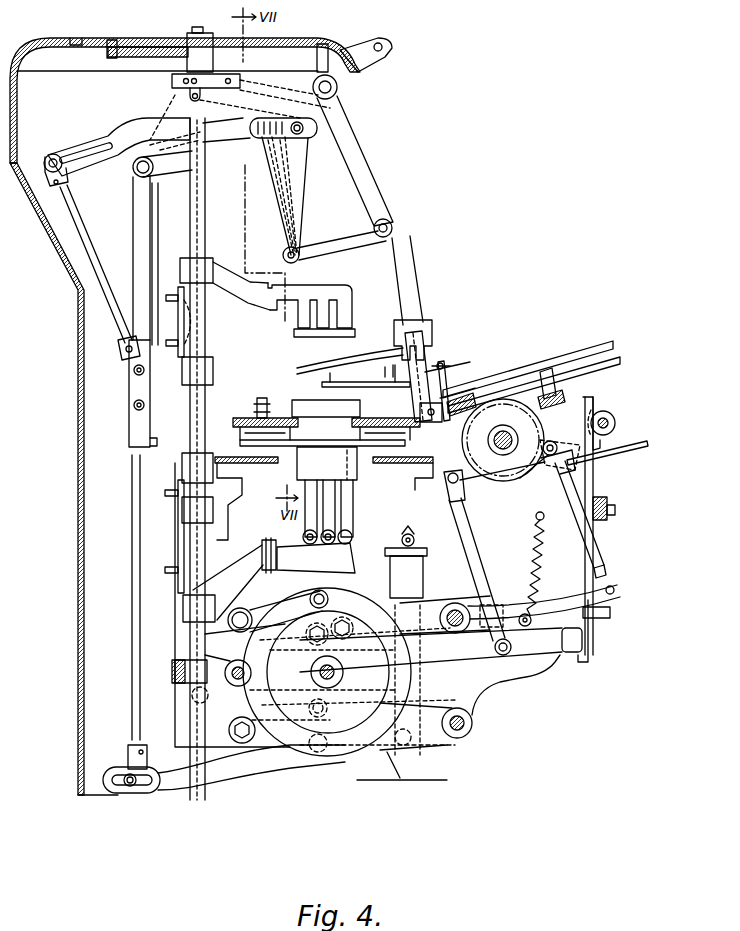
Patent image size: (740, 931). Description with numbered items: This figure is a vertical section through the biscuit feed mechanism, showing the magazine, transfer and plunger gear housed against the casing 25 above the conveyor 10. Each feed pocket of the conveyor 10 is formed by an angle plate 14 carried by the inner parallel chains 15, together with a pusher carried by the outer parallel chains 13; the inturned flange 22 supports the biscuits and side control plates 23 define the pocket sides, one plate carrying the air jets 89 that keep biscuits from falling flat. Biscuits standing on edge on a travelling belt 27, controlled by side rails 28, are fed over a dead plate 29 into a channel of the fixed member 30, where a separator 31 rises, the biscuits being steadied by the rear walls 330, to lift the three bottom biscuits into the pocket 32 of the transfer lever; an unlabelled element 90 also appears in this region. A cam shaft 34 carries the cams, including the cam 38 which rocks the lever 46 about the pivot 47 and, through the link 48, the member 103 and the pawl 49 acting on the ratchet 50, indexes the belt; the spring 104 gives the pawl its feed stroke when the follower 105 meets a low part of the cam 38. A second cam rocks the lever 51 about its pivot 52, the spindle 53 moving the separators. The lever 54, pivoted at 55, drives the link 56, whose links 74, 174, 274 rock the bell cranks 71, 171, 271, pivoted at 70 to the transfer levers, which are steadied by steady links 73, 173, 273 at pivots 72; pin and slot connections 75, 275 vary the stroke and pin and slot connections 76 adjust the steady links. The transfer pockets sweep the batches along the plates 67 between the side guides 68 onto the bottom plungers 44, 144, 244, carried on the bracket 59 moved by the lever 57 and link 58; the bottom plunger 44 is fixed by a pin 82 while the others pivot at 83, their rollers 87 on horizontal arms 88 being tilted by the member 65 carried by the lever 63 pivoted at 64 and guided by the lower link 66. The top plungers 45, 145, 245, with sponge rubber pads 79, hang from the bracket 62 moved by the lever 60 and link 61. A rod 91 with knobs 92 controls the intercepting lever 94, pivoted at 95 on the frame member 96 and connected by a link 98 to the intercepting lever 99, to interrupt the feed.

The conveyor 10 is at (292, 390).
The outer parallel chains 13 is at (250, 455).
The angle plate 14 is at (318, 418).
The inner parallel chains 15 is at (325, 501).
The inturned flange 22 is at (318, 443).
The side control plates 23 is at (240, 416).
The casing 25 is at (76, 283).
The travelling belt 27 is at (618, 362).
The side rails 28 is at (585, 350).
The dead plate 29 is at (465, 408).
The fixed member 30 is at (448, 388).
The separator 31 is at (426, 353).
The pocket 32 is at (434, 336).
The cam shaft 34 is at (343, 676).
The cam 38 is at (300, 730).
The bottom plunger 44 is at (354, 497).
The top plunger 45 is at (343, 302).
The lever 46 is at (478, 606).
The pivot 47 is at (452, 605).
The link 48 is at (598, 548).
The pawl 49 is at (553, 441).
The ratchet 50 is at (505, 425).
The lever 51 is at (470, 655).
The pivot 52 is at (236, 700).
The spindle 53 is at (478, 543).
The lever 54 is at (212, 775).
The pivot 55 is at (474, 722).
The link 56 is at (132, 524).
The lever 57 is at (244, 639).
The link 58 is at (183, 608).
The bracket 59 is at (247, 562).
The lever 60 is at (205, 703).
The link 61 is at (213, 363).
The bracket 62 is at (250, 300).
The lever 63 is at (258, 612).
The pivot 64 is at (244, 607).
The member 65 is at (420, 550).
The lower link 66 is at (262, 750).
The plates 67 is at (326, 383).
The side guides 68 is at (373, 356).
The pivot 70 is at (392, 226).
The bell crank 71 is at (115, 120).
The pivot 72 is at (296, 263).
The steady link 73 is at (294, 200).
The link 74 is at (85, 232).
The pin and slot connection 75 is at (58, 152).
The pin and slot connections 76 is at (250, 132).
The sponge rubber pads 79 is at (288, 346).
The pin 82 is at (352, 545).
The pivot 83 is at (306, 534).
The rollers 87 is at (405, 522).
The horizontal arms 88 is at (414, 536).
The jets 89 is at (268, 417).
The rod 90 is at (462, 364).
The rod 91 is at (612, 415).
The knobs 92 is at (616, 423).
The intercepting lever 94 is at (585, 572).
The pivot 95 is at (615, 509).
The member 96 is at (607, 502).
The link 98 is at (605, 618).
The intercepting lever 99 is at (590, 651).
The member 103 is at (534, 468).
The spring 104 is at (541, 545).
The follower 105 is at (316, 593).
The bottom plunger 144 is at (340, 511).
The top plunger 145 is at (327, 315).
The bell crank 171 is at (240, 140).
The steady link 173 is at (292, 190).
The link 174 is at (133, 240).
The bottom plunger 244 is at (330, 524).
The top plunger 245 is at (303, 315).
The bell crank 271 is at (160, 145).
The steady link 273 is at (288, 180).
The link 274 is at (152, 250).
The pin and slot connection 275 is at (163, 138).
The rear walls 330 is at (446, 364).